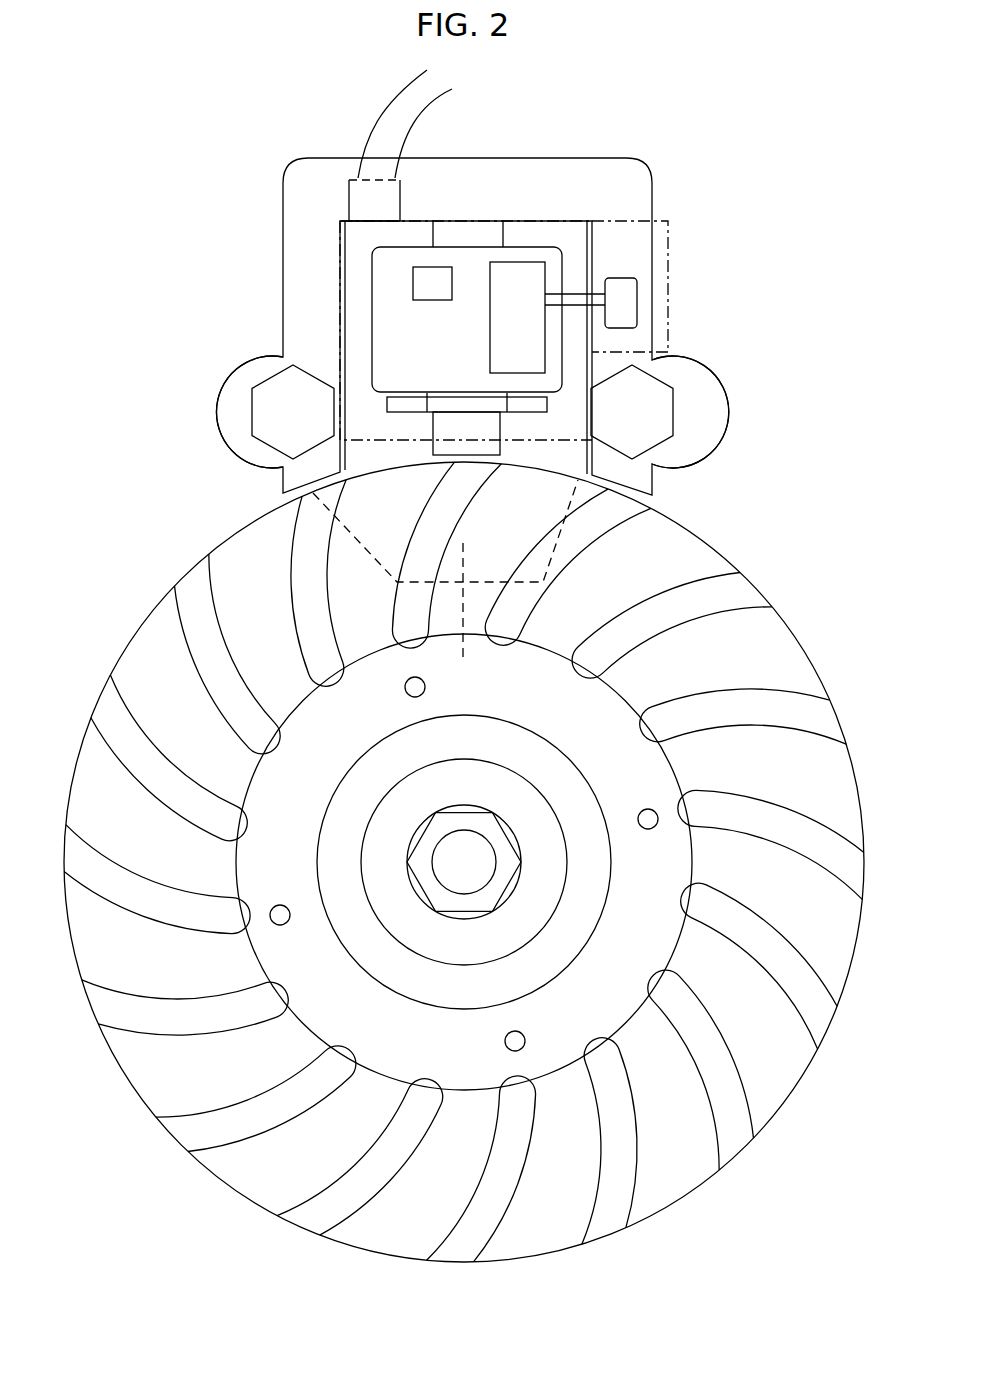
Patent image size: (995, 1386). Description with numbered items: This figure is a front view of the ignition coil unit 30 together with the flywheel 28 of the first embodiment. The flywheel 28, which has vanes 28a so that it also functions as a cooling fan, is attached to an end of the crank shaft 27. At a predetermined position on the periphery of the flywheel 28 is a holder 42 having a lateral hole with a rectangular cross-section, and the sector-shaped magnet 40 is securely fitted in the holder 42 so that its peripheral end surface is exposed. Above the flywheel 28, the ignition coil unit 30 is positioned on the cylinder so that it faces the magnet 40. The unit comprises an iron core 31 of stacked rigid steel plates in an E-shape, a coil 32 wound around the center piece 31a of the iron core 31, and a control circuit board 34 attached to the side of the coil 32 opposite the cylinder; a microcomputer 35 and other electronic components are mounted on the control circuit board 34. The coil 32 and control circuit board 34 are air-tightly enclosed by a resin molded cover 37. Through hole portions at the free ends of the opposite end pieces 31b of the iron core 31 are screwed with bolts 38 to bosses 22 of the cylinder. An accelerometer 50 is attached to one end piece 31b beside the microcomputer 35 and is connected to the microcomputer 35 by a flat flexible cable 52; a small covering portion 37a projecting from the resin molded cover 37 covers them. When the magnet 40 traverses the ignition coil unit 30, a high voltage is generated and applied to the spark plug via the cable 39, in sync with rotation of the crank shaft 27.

The boss 22 is at (266, 365).
The crank shaft 27 is at (477, 857).
The flywheel 28 is at (162, 594).
The vane 28a is at (778, 690).
The ignition coil unit 30 is at (461, 282).
The iron core 31 is at (614, 187).
The center piece 31a is at (490, 425).
The end piece 31b is at (302, 250).
The coil 32 is at (444, 403).
The control circuit board 34 is at (466, 258).
The microcomputer 35 is at (514, 272).
The resin molded cover 37 is at (352, 297).
The covering portion 37a is at (673, 238).
The bolt 38 is at (282, 412).
The cable 39 is at (368, 130).
The magnet 40 is at (470, 615).
The holder 42 is at (585, 562).
The accelerometer 50 is at (627, 305).
The flexible cable 52 is at (567, 290).